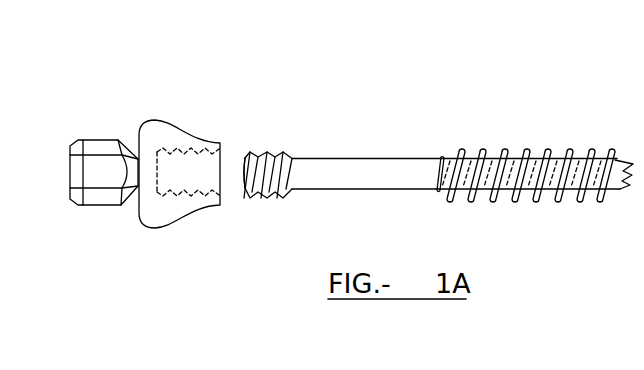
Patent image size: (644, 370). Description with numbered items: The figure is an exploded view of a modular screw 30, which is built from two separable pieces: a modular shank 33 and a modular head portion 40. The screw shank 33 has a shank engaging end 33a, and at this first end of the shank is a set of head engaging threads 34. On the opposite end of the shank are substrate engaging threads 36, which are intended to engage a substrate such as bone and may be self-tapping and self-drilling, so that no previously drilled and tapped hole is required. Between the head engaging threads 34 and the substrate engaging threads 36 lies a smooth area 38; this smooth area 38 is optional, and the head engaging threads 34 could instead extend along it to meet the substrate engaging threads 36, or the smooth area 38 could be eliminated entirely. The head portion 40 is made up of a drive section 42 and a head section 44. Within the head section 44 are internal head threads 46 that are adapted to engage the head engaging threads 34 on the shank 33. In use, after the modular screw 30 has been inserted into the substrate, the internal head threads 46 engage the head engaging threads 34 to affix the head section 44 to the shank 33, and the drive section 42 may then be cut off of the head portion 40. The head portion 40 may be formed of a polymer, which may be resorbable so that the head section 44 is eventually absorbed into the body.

The modular screw 30 is at (498, 77).
The modular shank 33 is at (340, 158).
The shank engaging end 33a is at (244, 186).
The head engaging threads 34 is at (278, 153).
The substrate engaging threads 36 is at (548, 152).
The smooth area 38 is at (418, 158).
The head portion 40 is at (140, 108).
The drive section 42 is at (92, 153).
The head section 44 is at (177, 130).
The internal head threads 46 is at (206, 153).